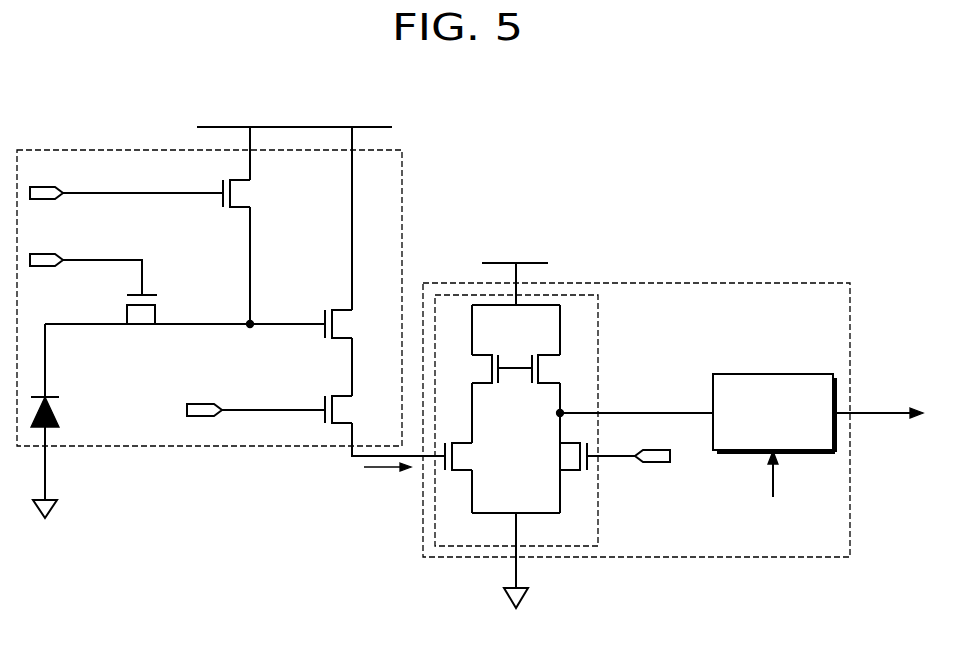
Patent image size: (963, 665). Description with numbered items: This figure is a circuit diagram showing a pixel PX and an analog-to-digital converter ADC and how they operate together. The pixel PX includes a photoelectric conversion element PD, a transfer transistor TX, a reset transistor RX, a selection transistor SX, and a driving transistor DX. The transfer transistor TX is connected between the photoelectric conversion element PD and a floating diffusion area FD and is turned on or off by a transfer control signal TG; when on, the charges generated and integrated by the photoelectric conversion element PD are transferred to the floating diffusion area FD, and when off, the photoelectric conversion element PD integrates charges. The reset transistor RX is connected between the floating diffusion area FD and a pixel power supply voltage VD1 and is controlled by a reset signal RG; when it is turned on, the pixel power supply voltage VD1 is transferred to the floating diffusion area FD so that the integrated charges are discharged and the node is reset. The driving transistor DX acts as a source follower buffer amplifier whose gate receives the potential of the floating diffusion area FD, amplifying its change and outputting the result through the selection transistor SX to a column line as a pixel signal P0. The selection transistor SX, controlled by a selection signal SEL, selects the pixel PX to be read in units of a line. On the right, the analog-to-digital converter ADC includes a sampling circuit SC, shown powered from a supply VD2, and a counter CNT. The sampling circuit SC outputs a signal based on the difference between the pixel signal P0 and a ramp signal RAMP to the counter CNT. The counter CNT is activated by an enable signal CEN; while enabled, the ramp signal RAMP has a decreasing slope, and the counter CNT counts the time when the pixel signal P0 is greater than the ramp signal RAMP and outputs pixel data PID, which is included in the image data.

The pixel PX is at (92, 150).
The pixel power supply voltage VD1 is at (272, 127).
The reset signal RG is at (126, 179).
The transfer control signal TG is at (86, 261).
The reset transistor RX is at (249, 193).
The transfer transistor TX is at (142, 325).
The floating diffusion area FD is at (185, 338).
The driving transistor DX is at (352, 324).
The selection transistor SX is at (352, 409).
The selection signal SEL is at (255, 396).
The photoelectric conversion element PD is at (60, 421).
The pixel signal P0 is at (387, 480).
The analog-to-digital converter ADC is at (763, 283).
The sampling circuit SC is at (598, 357).
The second power supply voltage VD2 is at (494, 277).
The ramp signal RAMP is at (633, 471).
The counter CNT is at (785, 373).
The pixel data PID is at (878, 401).
The enable signal CEN is at (775, 488).